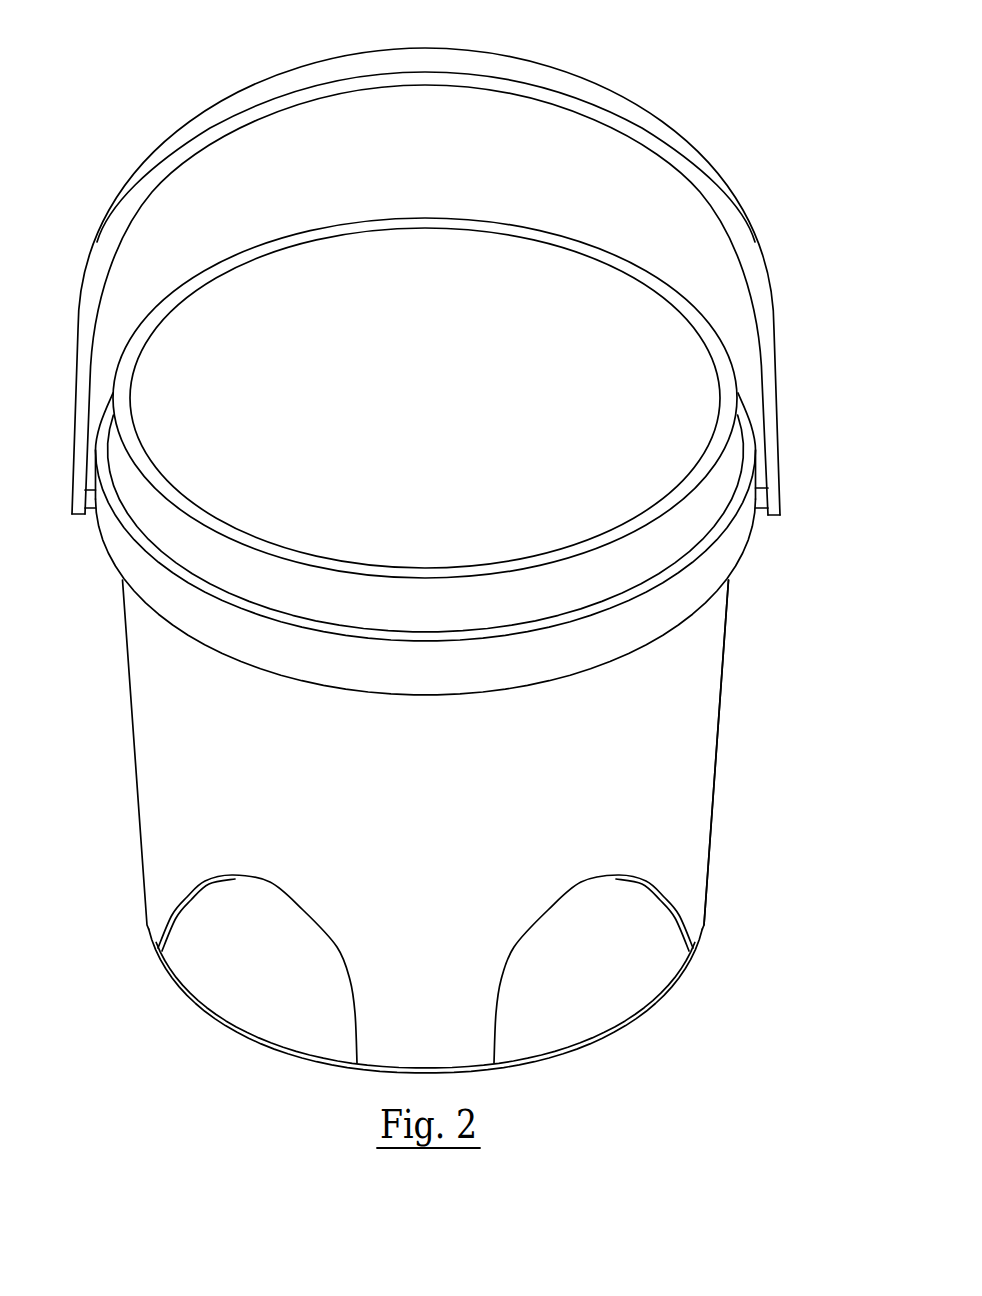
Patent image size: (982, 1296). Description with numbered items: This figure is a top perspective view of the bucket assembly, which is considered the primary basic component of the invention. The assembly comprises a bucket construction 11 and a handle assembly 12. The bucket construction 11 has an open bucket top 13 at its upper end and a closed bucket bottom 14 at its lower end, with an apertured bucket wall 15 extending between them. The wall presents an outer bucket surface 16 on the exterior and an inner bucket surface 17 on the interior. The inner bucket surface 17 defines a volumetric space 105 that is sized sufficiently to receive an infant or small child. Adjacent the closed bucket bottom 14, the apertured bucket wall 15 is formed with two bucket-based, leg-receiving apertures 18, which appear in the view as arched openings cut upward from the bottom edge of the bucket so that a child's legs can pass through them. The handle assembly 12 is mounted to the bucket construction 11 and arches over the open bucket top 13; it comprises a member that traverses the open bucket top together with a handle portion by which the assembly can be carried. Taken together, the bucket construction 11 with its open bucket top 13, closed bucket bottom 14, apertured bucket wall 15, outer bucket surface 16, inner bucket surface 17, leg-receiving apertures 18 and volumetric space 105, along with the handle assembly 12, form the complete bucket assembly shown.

The bucket construction 11 is at (714, 759).
The handle assembly 12 is at (567, 78).
The open bucket top 13 is at (607, 290).
The closed bucket bottom 14 is at (298, 1058).
The apertured bucket wall 15 is at (688, 815).
The outer bucket surface 16 is at (368, 815).
The inner bucket surface 17 is at (428, 284).
The leg-receiving apertures 18 is at (236, 976).
The volumetric space 105 is at (365, 432).